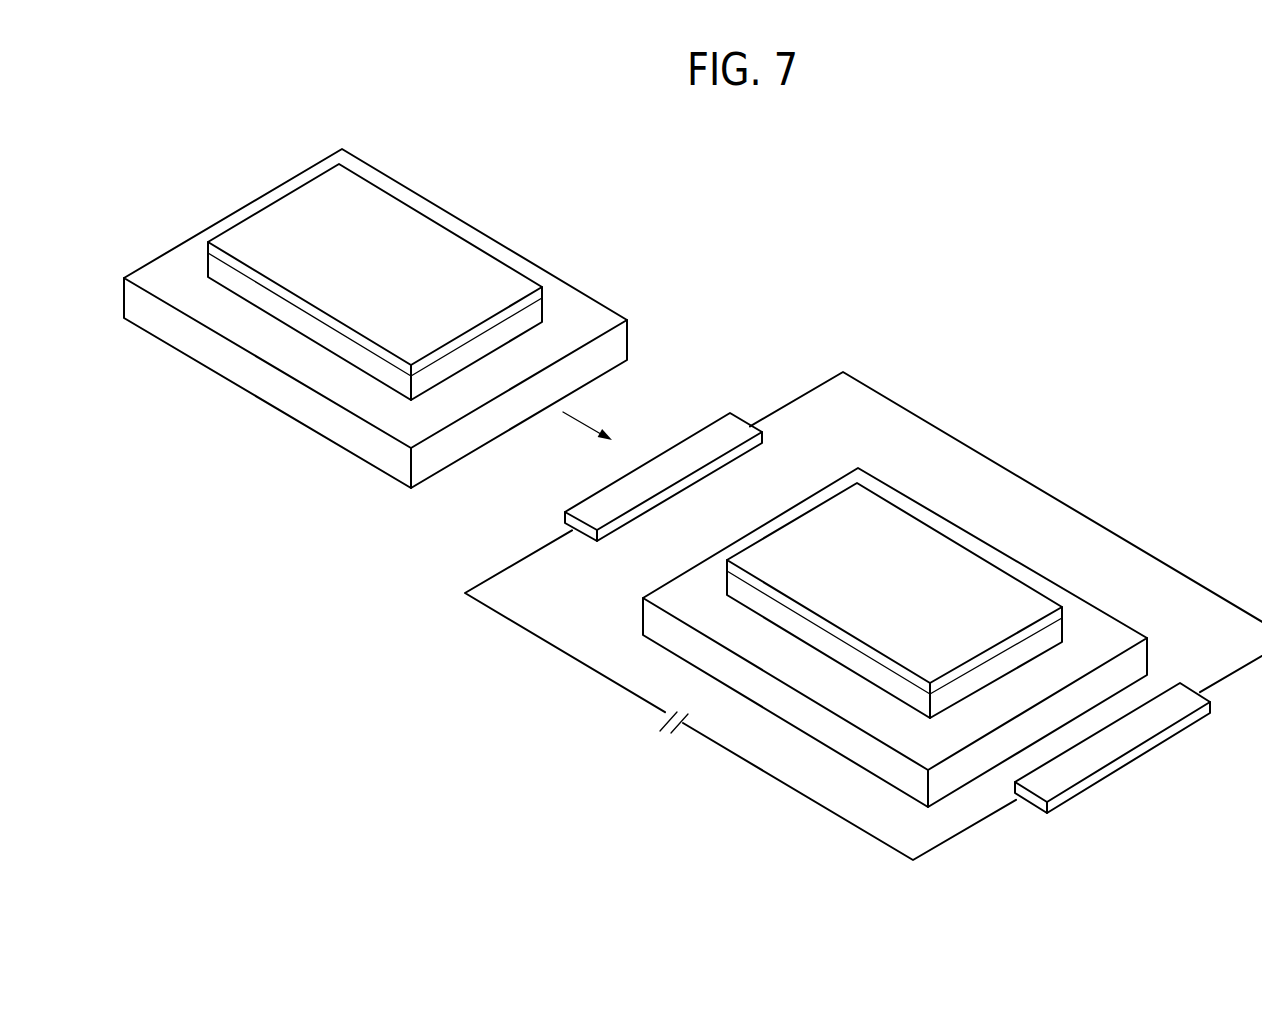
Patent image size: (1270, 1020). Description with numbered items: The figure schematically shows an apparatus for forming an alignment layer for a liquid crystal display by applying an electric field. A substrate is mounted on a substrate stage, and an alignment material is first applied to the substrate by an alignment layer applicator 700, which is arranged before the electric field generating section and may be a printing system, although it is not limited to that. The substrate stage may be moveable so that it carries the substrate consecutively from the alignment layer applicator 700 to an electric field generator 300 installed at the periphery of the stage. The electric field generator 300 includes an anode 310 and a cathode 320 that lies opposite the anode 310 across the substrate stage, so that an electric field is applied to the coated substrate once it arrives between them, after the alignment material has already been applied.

The electric field generator 300 is at (661, 767).
The anode 310 is at (720, 432).
The cathode 320 is at (1177, 703).
The alignment layer applicator 700 is at (375, 357).